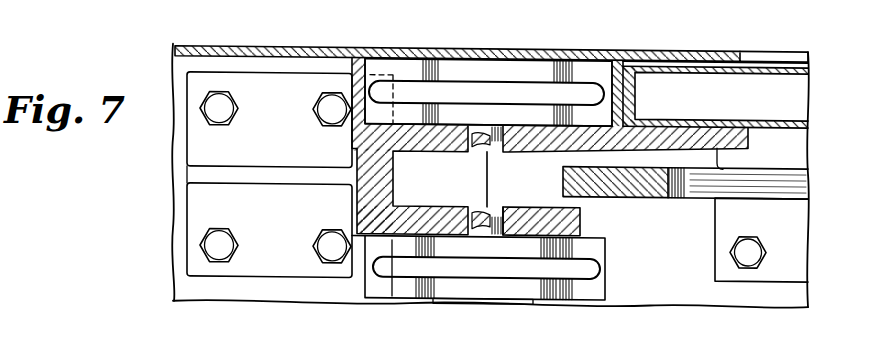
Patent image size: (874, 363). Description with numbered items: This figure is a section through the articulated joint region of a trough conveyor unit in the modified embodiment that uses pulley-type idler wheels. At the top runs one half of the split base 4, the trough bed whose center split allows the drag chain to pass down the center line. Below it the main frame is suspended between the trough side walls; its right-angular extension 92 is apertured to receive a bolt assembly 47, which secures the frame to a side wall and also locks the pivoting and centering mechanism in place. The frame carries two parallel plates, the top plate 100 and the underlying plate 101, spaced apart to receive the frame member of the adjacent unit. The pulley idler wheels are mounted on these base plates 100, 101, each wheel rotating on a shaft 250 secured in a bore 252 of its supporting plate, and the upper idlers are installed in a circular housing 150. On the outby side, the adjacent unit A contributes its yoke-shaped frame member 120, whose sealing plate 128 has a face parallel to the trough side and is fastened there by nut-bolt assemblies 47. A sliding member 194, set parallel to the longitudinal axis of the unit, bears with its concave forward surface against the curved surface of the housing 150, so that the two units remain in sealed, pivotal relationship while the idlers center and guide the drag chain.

The split base half 4 is at (572, 50).
The bolt assembly 47 is at (323, 110).
The right-angular extension 92 is at (314, 89).
The top plate 100 is at (545, 147).
The underlying plate 101 is at (565, 226).
The frame member 120 is at (688, 185).
The sealing plate 128 is at (795, 141).
The circular housing 150 is at (622, 59).
The sliding member 194 is at (773, 74).
The shaft 250 is at (489, 215).
The bore 252 is at (476, 149).
The unit A is at (810, 59).